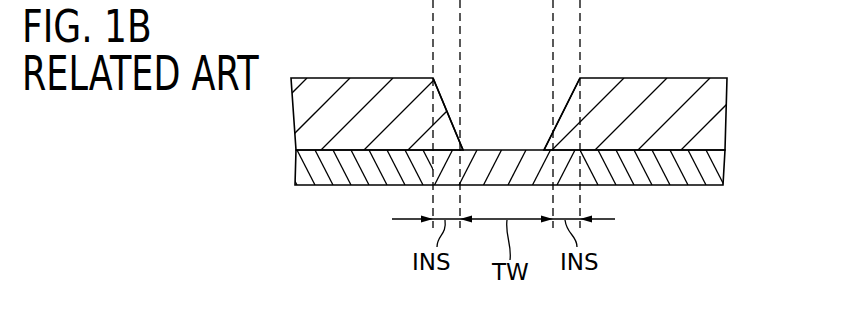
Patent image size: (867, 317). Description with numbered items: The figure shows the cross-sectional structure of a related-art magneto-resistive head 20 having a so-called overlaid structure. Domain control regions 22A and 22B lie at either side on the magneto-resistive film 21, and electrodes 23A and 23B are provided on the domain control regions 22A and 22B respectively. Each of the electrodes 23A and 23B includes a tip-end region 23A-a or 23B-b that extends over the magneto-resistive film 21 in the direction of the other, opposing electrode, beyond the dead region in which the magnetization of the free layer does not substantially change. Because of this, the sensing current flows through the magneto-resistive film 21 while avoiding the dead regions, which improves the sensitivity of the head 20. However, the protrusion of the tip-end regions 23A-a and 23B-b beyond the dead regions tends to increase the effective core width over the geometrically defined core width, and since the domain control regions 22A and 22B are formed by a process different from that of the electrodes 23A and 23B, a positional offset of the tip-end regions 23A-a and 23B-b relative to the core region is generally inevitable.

The magneto-resistive head 20 is at (862, 82).
The magneto-resistive film 21 is at (507, 150).
The domain control region 22A is at (709, 165).
The domain control region 22B is at (303, 168).
The electrode 23A is at (708, 104).
The electrode 23B is at (303, 112).
The tip-end region 23A-a is at (567, 116).
The tip-end region 23B-b is at (441, 112).